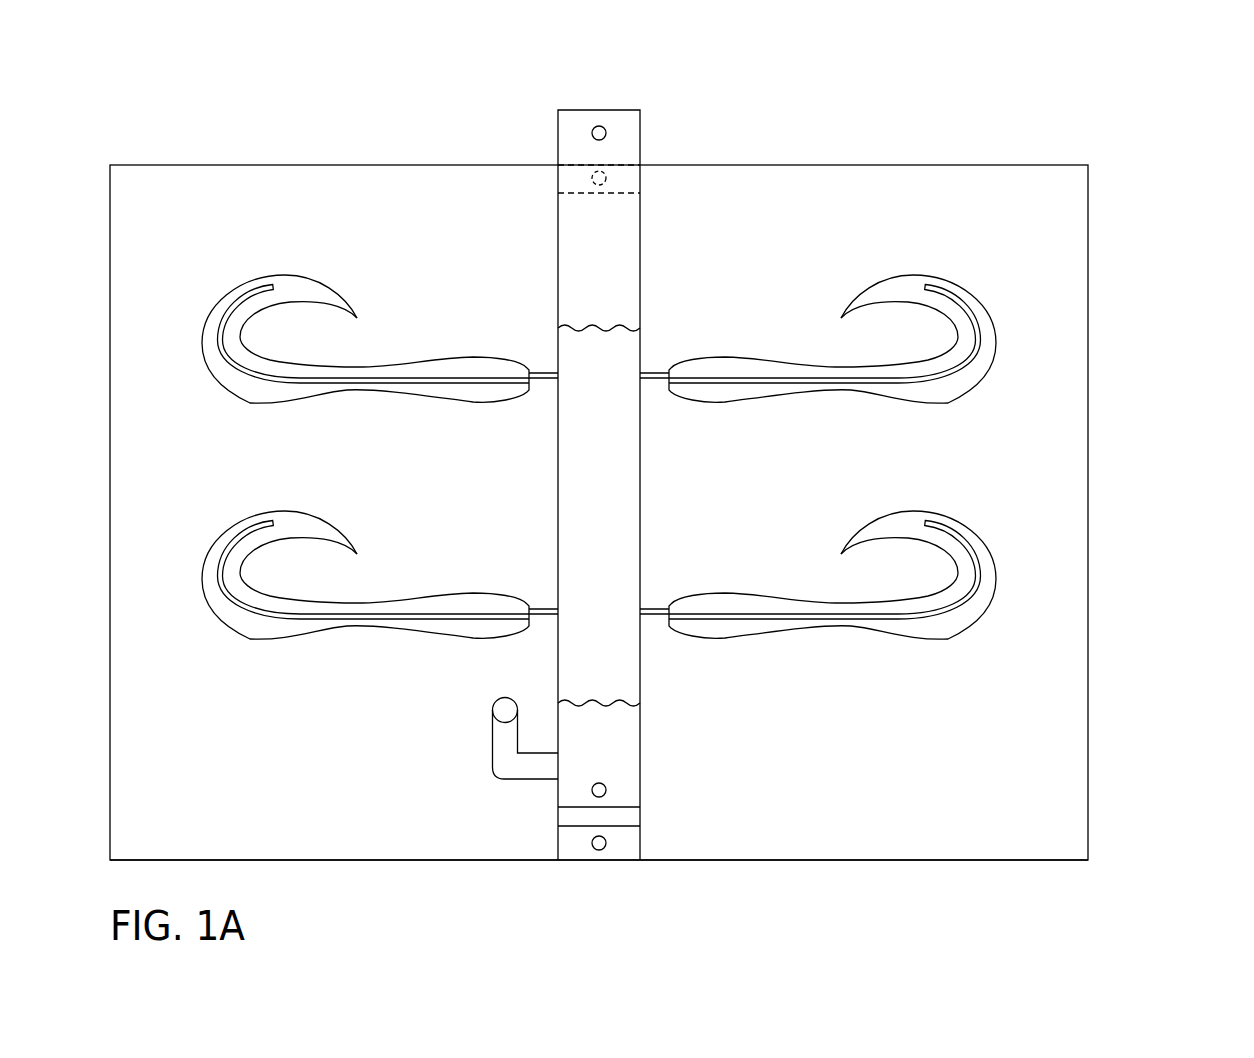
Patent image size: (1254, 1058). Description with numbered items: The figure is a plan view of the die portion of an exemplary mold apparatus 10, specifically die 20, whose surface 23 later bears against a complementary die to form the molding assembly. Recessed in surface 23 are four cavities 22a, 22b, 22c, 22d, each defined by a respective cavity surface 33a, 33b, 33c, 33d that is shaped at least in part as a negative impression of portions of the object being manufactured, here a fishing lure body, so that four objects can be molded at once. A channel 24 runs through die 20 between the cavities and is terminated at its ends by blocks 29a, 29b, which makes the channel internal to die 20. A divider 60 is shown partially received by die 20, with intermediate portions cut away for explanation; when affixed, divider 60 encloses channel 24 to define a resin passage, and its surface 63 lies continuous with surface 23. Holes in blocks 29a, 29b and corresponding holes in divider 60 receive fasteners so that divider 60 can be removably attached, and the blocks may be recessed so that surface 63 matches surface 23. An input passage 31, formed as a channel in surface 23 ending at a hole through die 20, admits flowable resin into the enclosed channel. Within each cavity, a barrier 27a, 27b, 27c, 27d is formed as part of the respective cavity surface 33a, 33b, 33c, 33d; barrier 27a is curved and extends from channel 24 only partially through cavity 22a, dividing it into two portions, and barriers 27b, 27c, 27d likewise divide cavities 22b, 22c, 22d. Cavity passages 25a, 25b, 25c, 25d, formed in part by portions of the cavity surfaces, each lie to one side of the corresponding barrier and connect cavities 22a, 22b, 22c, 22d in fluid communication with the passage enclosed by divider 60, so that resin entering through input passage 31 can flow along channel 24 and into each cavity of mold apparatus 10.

The mold apparatus 10 is at (1138, 105).
The die 20 is at (1062, 733).
The surface 23 is at (960, 838).
The channel 24 is at (627, 452).
The cavity passage 25a is at (543, 372).
The cavity passage 25b is at (543, 608).
The cavity passage 25c is at (655, 372).
The cavity passage 25d is at (655, 608).
The cavity 22a is at (288, 368).
The cavity 22b is at (288, 604).
The cavity 22c is at (910, 368).
The cavity 22d is at (910, 604).
The barrier 27a is at (235, 378).
The barrier 27b is at (235, 614).
The barrier 27c is at (963, 378).
The barrier 27d is at (963, 614).
The cavity surface 33a is at (270, 398).
The cavity surface 33b is at (270, 634).
The cavity surface 33c is at (928, 398).
The cavity surface 33d is at (928, 634).
The block 29a is at (625, 852).
The block 29b is at (567, 176).
The input passage 31 is at (503, 747).
The divider 60 is at (628, 158).
The surface 63 is at (628, 118).